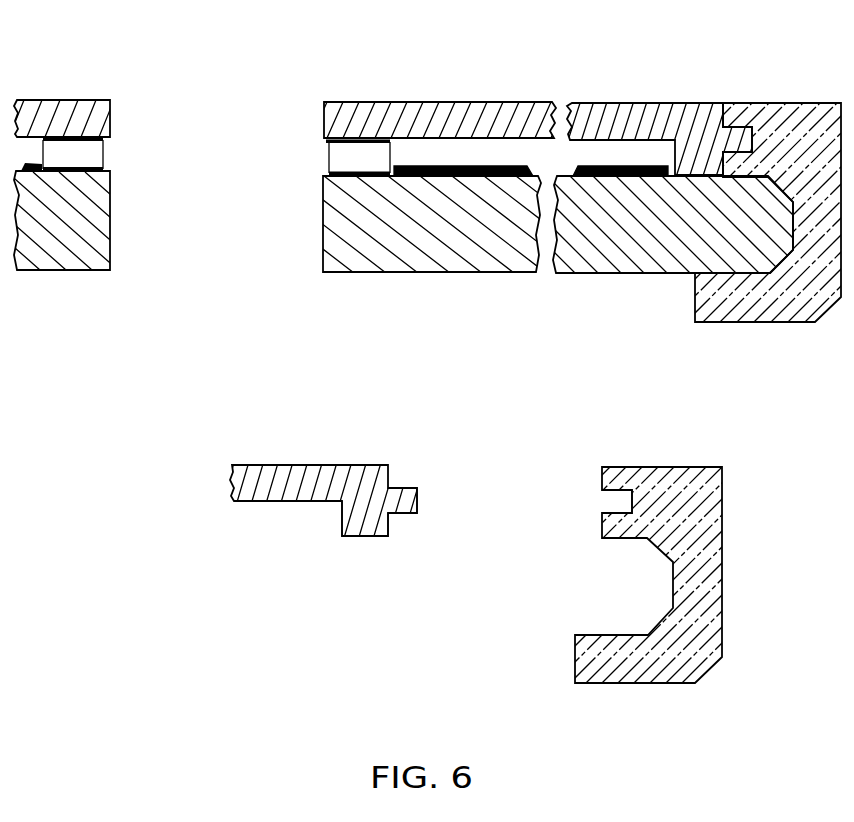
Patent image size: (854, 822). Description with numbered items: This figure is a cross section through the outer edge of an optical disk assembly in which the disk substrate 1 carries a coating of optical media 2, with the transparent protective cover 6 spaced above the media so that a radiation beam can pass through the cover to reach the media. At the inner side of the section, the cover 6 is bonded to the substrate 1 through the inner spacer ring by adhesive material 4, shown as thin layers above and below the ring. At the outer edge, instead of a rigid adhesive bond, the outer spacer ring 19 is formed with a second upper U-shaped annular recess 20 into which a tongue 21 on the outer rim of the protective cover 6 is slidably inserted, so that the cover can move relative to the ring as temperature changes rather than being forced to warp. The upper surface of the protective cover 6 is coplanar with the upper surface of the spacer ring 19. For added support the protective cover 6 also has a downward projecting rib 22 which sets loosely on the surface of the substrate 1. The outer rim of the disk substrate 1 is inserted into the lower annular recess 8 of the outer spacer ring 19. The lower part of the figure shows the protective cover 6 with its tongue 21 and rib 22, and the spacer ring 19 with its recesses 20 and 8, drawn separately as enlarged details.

The disk substrate 1 is at (368, 258).
The optical media 2 is at (433, 165).
The adhesive material 4 is at (78, 170).
The transparent protective cover 6 is at (508, 101).
The lower annular recess 8 is at (640, 591).
The outer spacer ring 19 is at (740, 323).
The second upper U-shaped annular recess 20 is at (607, 503).
The tongue 21 is at (400, 488).
The downward projecting rib 22 is at (340, 532).